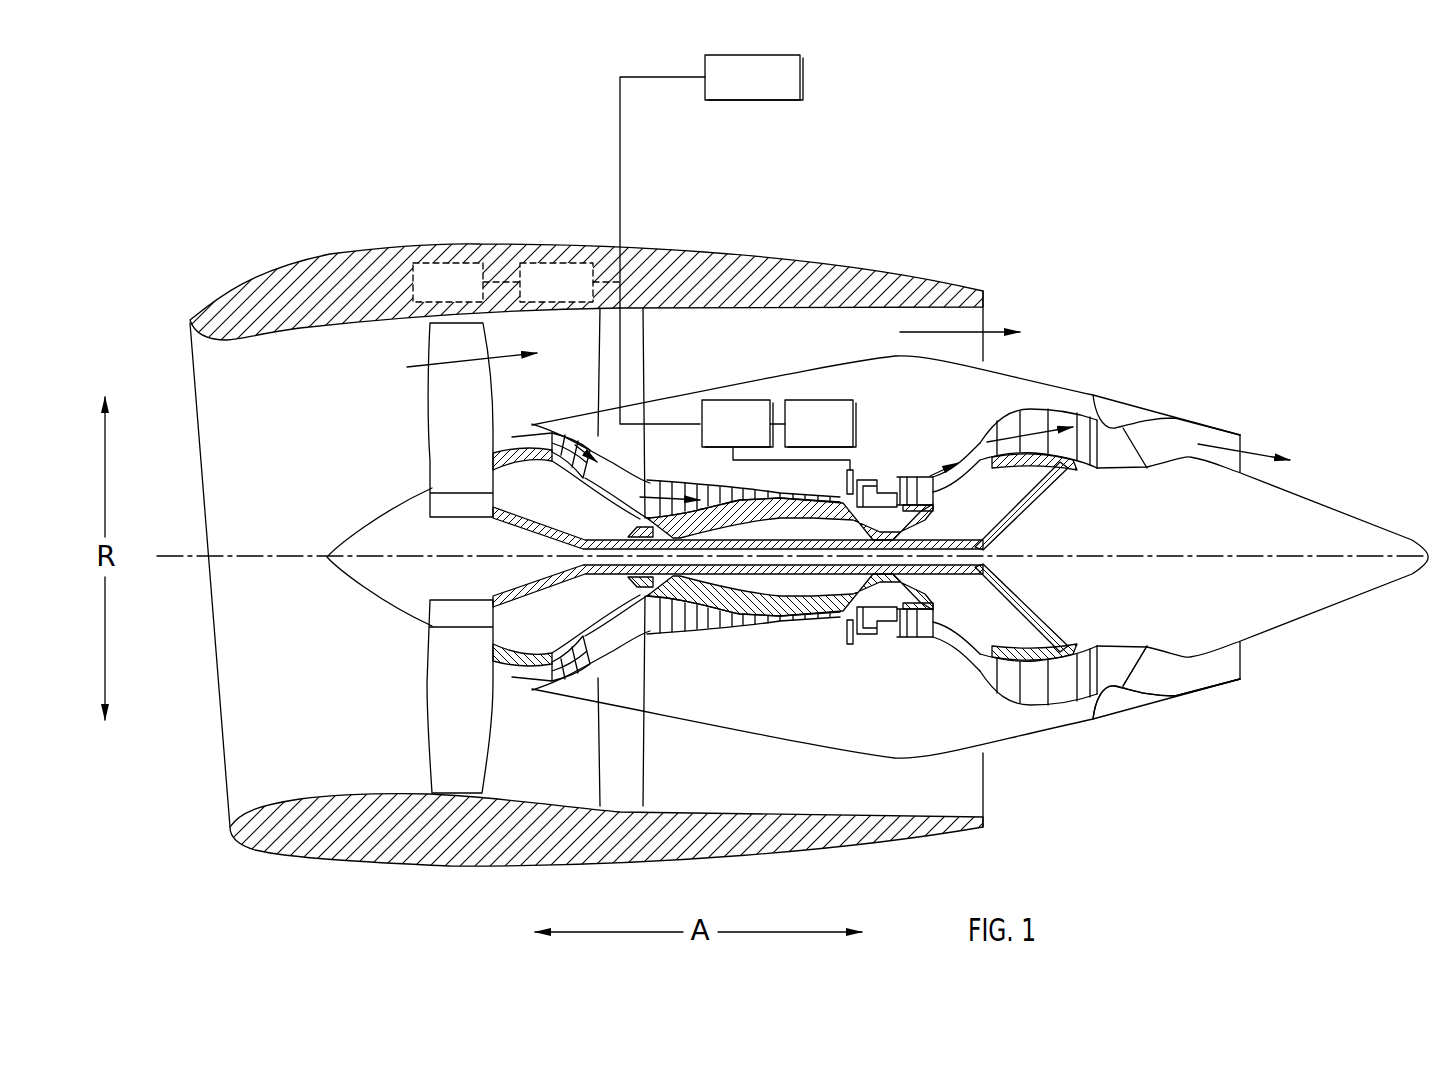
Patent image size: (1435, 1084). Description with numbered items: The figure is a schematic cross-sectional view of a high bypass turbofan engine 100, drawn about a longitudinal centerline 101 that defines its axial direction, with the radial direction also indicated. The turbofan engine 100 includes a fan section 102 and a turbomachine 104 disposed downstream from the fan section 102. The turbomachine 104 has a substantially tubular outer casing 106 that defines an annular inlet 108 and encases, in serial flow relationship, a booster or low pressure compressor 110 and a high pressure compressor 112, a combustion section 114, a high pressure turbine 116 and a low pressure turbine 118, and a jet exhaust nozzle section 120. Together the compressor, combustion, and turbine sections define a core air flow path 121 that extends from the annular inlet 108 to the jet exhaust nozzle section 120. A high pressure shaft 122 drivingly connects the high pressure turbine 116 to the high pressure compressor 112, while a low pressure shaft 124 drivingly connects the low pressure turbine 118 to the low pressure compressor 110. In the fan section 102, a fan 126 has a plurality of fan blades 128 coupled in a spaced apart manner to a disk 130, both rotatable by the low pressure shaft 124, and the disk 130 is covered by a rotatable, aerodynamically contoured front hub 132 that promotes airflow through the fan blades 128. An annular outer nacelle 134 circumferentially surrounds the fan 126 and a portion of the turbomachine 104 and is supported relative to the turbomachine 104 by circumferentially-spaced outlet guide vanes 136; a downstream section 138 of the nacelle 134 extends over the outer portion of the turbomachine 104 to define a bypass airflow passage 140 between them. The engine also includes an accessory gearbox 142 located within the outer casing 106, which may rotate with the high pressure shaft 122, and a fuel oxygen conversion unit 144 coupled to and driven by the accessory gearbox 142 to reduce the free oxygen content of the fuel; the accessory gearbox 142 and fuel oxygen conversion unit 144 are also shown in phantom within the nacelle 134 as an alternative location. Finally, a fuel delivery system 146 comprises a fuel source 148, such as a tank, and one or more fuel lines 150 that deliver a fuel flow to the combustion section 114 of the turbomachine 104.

The turbofan engine 100 is at (1141, 265).
The longitudinal centerline 101 is at (1207, 553).
The fan section 102 is at (380, 340).
The turbomachine 104 is at (765, 362).
The outer casing 106 is at (827, 745).
The annular inlet 108 is at (553, 672).
The low pressure compressor 110 is at (573, 690).
The high pressure compressor 112 is at (677, 622).
The combustion section 114 is at (867, 627).
The high pressure turbine 116 is at (938, 638).
The low pressure turbine 118 is at (1077, 705).
The jet exhaust nozzle section 120 is at (1140, 673).
The core air flow path 121 is at (625, 640).
The high pressure shaft 122 is at (873, 527).
The low pressure shaft 124 is at (940, 543).
The fan 126 is at (368, 422).
The fan blades 128 is at (427, 727).
The disk 130 is at (447, 507).
The front hub 132 is at (340, 578).
The outer nacelle 134 is at (483, 867).
The outlet guide vanes 136 is at (643, 342).
The downstream section 138 is at (903, 275).
The bypass airflow passage 140 is at (830, 338).
The accessory gearbox 142 is at (837, 437).
The fuel oxygen conversion unit 144 is at (753, 437).
The fuel delivery system 146 is at (537, 113).
The fuel source 148 is at (734, 91).
The fuel lines 150 is at (620, 197).